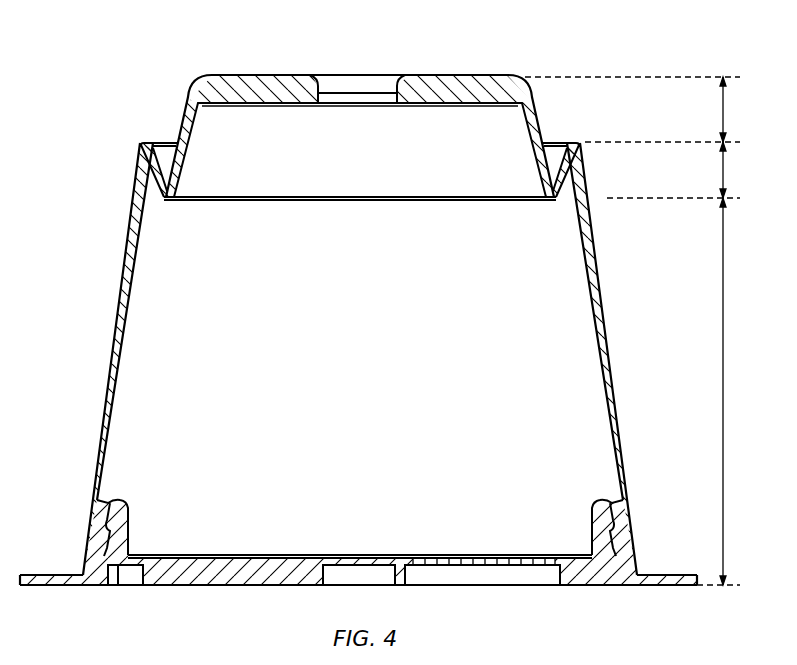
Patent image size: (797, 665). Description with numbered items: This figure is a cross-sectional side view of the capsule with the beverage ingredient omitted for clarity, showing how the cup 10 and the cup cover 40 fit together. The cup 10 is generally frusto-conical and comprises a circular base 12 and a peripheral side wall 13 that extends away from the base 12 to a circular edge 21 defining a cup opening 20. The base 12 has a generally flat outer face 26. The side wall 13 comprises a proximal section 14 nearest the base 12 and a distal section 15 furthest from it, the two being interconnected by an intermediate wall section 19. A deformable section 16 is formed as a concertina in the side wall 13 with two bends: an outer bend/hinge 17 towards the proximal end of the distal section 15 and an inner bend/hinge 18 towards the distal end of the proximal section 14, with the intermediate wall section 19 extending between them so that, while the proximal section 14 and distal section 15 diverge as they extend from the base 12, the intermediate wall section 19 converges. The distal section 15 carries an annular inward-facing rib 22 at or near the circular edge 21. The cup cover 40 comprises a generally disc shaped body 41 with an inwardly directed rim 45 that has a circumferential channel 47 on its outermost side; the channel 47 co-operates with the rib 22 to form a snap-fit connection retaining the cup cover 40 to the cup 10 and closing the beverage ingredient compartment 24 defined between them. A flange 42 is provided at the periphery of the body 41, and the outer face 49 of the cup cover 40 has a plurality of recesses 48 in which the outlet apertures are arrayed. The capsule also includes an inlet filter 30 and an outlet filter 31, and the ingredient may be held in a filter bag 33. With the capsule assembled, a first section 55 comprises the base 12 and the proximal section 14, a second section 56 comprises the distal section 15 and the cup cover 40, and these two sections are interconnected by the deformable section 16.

The cup 10 is at (90, 306).
The base 12 is at (498, 74).
The peripheral side wall 13 is at (93, 252).
The proximal section 14 is at (177, 116).
The distal section 15 is at (101, 407).
The deformable section 16 is at (683, 170).
The outer bend/hinge 17 is at (578, 141).
The inner bend/hinge 18 is at (547, 203).
The intermediate wall section 19 is at (146, 168).
The cup opening 20 is at (279, 527).
The circular edge 21 is at (83, 557).
The annular inward-facing rib 22 is at (100, 531).
The beverage ingredient compartment 24 is at (570, 344).
The outer face 26 is at (440, 75).
The inlet filter 30 is at (260, 105).
The outlet filter 31 is at (178, 556).
The filter bag 33 is at (332, 74).
The cup cover 40 is at (598, 576).
The disc shaped body 41 is at (523, 576).
The flange 42 is at (668, 586).
The rim 45 is at (598, 506).
The circumferential channel 47 is at (607, 530).
The recesses 48 is at (473, 585).
The outer face 49 is at (195, 585).
The first section 55 is at (642, 109).
The second section 56 is at (728, 391).